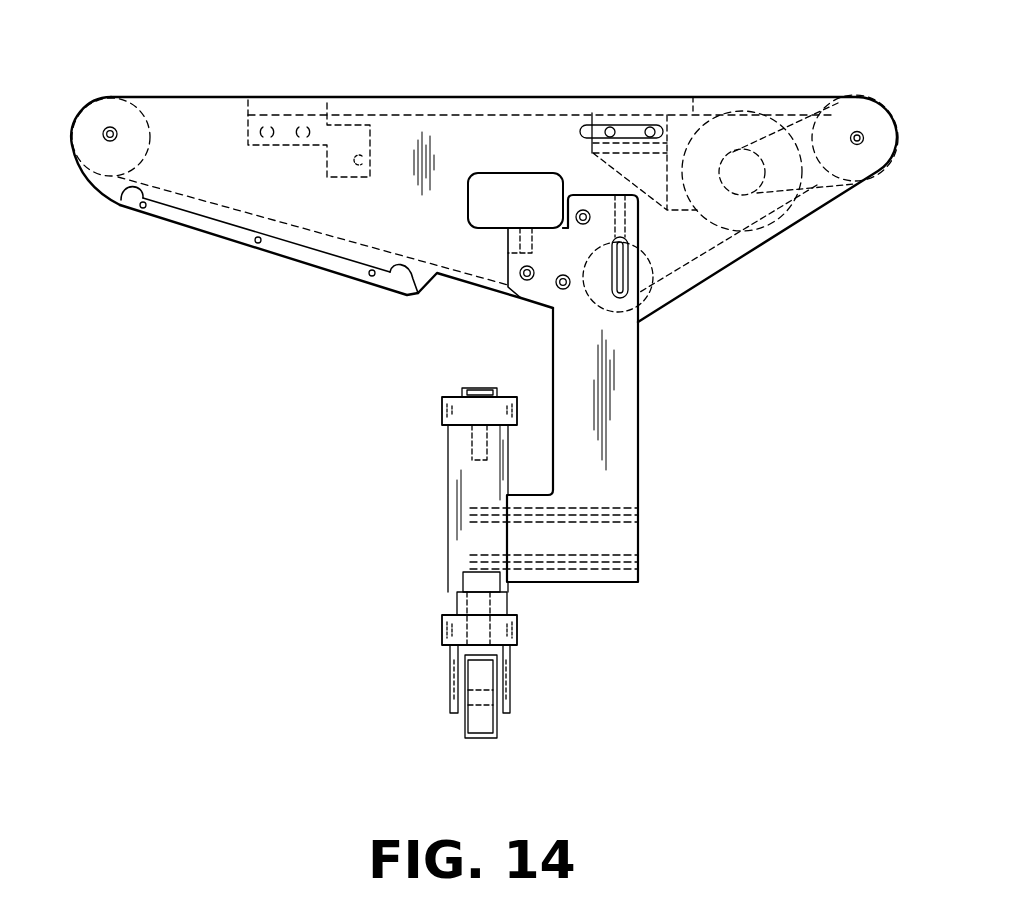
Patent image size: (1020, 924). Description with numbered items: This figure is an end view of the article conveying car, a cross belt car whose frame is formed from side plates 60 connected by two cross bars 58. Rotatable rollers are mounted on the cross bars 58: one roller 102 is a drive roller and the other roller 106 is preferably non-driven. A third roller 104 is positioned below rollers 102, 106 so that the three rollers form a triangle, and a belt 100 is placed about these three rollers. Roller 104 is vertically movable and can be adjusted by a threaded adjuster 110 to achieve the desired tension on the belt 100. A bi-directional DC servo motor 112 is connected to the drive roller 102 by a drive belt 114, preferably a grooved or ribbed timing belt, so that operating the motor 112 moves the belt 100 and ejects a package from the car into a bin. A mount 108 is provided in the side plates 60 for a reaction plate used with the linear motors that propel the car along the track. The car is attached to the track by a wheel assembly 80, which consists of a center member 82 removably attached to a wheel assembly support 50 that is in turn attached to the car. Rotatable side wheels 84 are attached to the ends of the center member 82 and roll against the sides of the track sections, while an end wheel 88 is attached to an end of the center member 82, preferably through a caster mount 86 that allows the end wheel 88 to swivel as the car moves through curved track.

The wheel assembly support 50 is at (634, 399).
The cross bar 58 is at (857, 131).
The side plate 60 is at (392, 133).
The wheel assembly 80 is at (414, 488).
The center member 82 is at (458, 542).
The side wheel 84 is at (512, 397).
The caster mount 86 is at (508, 659).
The end wheel 88 is at (480, 731).
The belt 100 is at (200, 200).
The drive roller 102 is at (872, 160).
The third roller 104 is at (648, 281).
The roller 106 is at (97, 148).
The mount 108 is at (284, 249).
The threaded adjuster 110 is at (622, 231).
The bi-directional DC servo motor 112 is at (769, 222).
The drive belt 114 is at (818, 190).